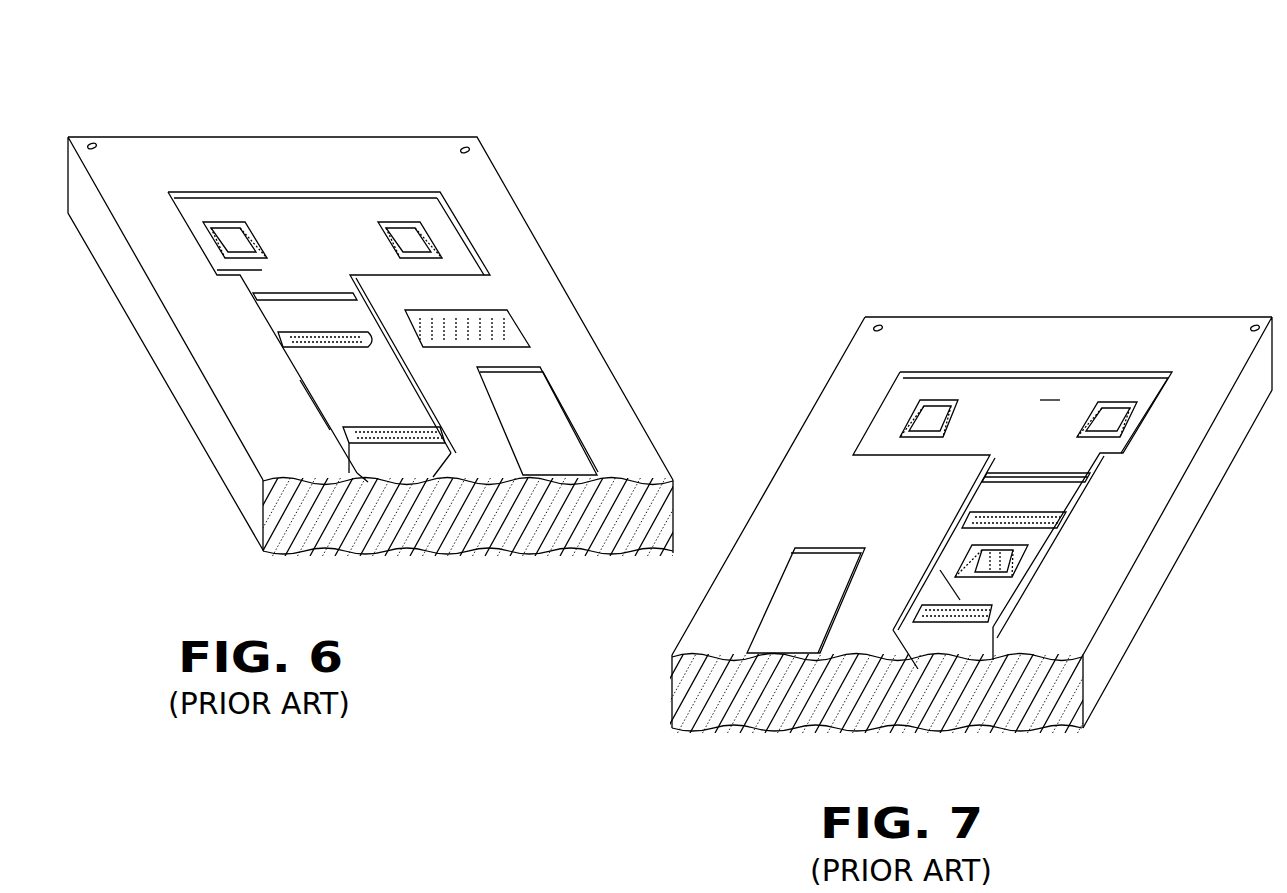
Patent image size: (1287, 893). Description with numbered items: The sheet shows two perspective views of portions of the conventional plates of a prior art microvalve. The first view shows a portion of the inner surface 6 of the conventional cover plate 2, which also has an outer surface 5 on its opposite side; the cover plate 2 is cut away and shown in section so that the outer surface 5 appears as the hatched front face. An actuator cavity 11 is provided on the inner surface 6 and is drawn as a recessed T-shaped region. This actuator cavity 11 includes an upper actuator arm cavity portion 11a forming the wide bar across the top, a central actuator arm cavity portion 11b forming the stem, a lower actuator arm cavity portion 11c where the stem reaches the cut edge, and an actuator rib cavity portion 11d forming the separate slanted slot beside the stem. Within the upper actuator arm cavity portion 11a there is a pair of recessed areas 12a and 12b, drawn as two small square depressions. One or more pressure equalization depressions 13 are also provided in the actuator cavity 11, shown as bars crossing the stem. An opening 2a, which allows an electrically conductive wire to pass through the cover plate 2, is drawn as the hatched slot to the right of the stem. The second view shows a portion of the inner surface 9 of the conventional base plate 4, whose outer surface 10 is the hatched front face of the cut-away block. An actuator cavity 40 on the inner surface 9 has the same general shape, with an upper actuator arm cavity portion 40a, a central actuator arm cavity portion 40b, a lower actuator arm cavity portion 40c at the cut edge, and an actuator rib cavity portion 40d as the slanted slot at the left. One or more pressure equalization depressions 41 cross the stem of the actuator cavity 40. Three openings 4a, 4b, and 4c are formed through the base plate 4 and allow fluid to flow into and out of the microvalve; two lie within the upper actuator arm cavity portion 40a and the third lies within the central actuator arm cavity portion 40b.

In FIG. 6, the cover plate 2 is at (323, 137).
In FIG. 6, the opening 2a is at (497, 318).
In FIG. 6, the outer surface 5 is at (440, 552).
In FIG. 6, the inner surface 6 is at (432, 160).
In FIG. 6, the actuator cavity 11 is at (318, 215).
In FIG. 6, the upper actuator arm cavity portion 11a is at (265, 268).
In FIG. 6, the central actuator arm cavity portion 11b is at (345, 388).
In FIG. 6, the lower actuator arm cavity portion 11c is at (403, 470).
In FIG. 6, the actuator rib cavity portion 11d is at (540, 398).
In FIG. 6, the recessed area 12a is at (229, 240).
In FIG. 6, the recessed area 12b is at (417, 246).
In FIG. 6, the pressure equalization depression 13 is at (318, 330).
In FIG. 7, the base plate 4 is at (990, 316).
In FIG. 7, the opening 4a is at (925, 415).
In FIG. 7, the opening 4b is at (1113, 413).
In FIG. 7, the opening 4c is at (998, 565).
In FIG. 7, the inner surface 9 is at (909, 337).
In FIG. 7, the outer surface 10 is at (761, 735).
In FIG. 7, the actuator cavity 40 is at (1011, 405).
In FIG. 7, the upper actuator arm cavity portion 40a is at (1054, 395).
In FIG. 7, the central actuator arm cavity portion 40b is at (949, 593).
In FIG. 7, the lower actuator arm cavity portion 40c is at (933, 643).
In FIG. 7, the actuator rib cavity portion 40d is at (805, 580).
In FIG. 7, the pressure equalization depression 41 is at (1027, 507).